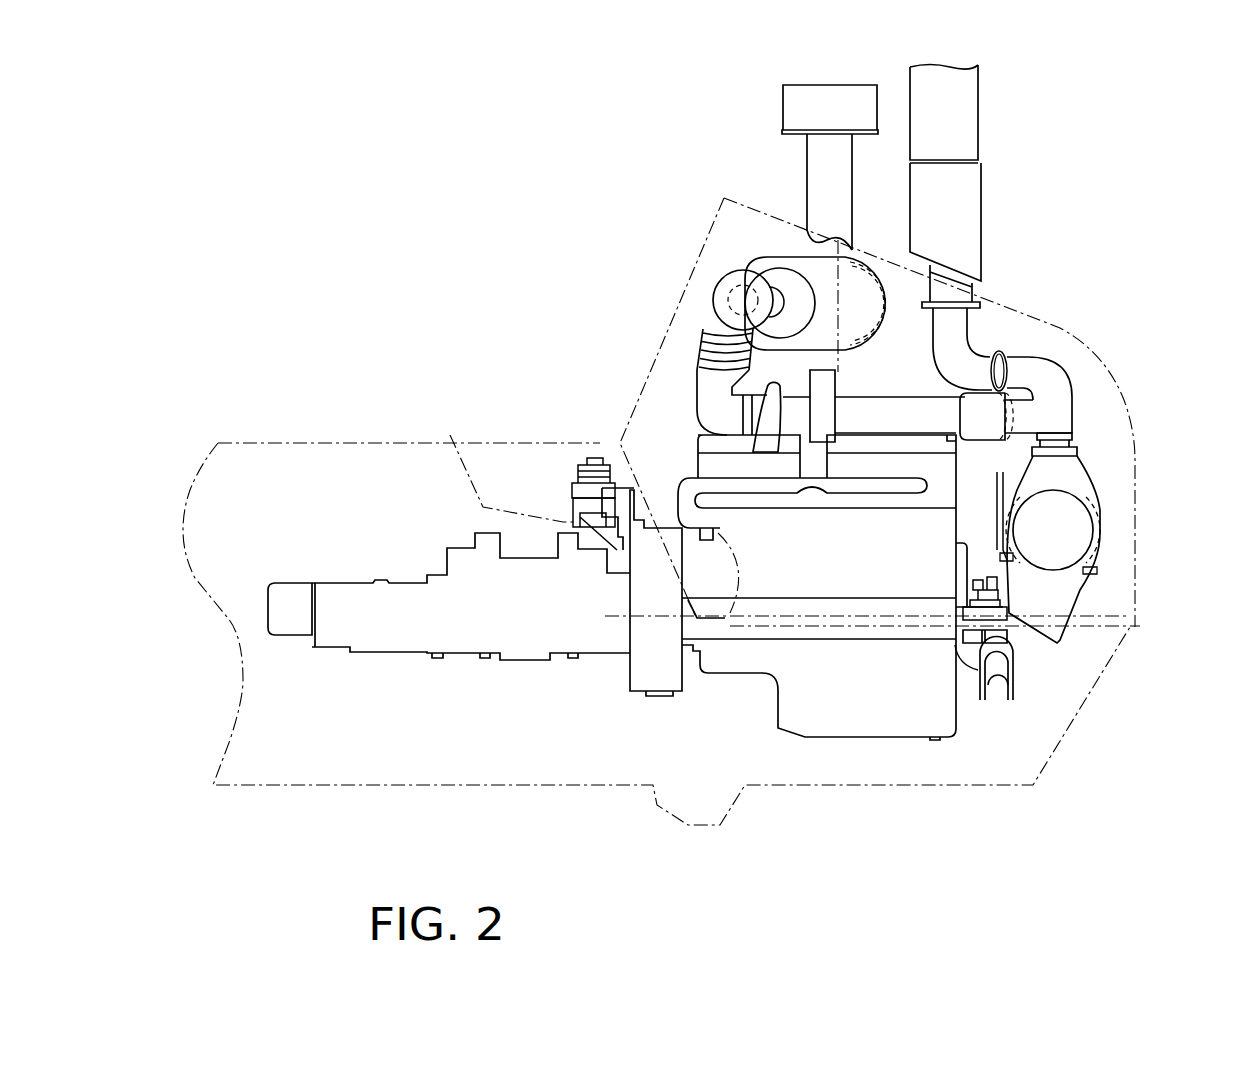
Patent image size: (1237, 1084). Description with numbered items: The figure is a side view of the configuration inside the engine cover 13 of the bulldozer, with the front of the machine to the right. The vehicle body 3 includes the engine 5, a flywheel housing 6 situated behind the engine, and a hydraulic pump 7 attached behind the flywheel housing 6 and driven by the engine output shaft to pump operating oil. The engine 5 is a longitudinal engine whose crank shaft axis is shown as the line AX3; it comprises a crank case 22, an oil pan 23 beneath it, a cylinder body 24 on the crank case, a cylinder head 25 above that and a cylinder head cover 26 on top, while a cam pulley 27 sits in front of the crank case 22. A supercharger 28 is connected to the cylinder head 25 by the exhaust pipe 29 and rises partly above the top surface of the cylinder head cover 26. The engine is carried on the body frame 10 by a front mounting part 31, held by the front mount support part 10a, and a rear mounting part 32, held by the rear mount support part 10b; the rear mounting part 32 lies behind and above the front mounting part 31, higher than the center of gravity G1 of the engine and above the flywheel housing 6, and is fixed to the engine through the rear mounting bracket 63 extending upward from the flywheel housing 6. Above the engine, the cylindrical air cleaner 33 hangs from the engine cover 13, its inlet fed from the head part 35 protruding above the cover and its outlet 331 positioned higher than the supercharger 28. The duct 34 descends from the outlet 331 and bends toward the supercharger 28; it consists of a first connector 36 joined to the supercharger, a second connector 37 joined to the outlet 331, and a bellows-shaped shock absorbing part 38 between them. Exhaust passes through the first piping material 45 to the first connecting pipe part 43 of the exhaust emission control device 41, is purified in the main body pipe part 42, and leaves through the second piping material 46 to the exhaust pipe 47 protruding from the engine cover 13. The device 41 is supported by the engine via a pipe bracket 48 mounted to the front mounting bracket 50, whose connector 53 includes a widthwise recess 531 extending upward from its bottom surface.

The vehicle body 3 is at (495, 269).
The engine 5 is at (684, 466).
The flywheel housing 6 is at (623, 680).
The hydraulic pump 7 is at (367, 585).
The body frame 10 is at (383, 437).
The front mount support part 10a is at (1012, 632).
The rear mount support part 10b is at (498, 463).
The engine cover 13 is at (1020, 307).
The crank case 22 is at (722, 627).
The oil pan 23 is at (897, 730).
The cylinder body 24 is at (867, 565).
The cylinder head 25 is at (688, 452).
The cylinder head cover 26 is at (688, 458).
The cam pulley 27 is at (1082, 591).
The supercharger 28 is at (757, 412).
The exhaust pipe 29 is at (669, 497).
The front mounting part 31 is at (977, 645).
The rear mounting part 32 is at (563, 470).
The air cleaner 33 is at (790, 255).
The outlet 331 is at (783, 283).
The duct 34 is at (706, 322).
The head part 35 is at (783, 108).
The first connector 36 is at (836, 245).
The second connector 37 is at (701, 315).
The shock absorbing part 38 is at (697, 330).
The exhaust emission control device 41 is at (1117, 482).
The main body pipe part 42 is at (1083, 537).
The first connecting pipe part 43 is at (1077, 455).
The first piping material 45 is at (1052, 417).
The second piping material 46 is at (1027, 377).
The exhaust pipe 47 is at (967, 193).
The pipe bracket 48 is at (1090, 599).
The front mounting bracket 50 is at (1027, 665).
The connector 53 is at (1013, 683).
The recess 531 is at (997, 697).
The rear mounting bracket 63 is at (570, 492).
The center of gravity G1 is at (792, 572).
The central axis of the crank shaft AX3 is at (838, 616).